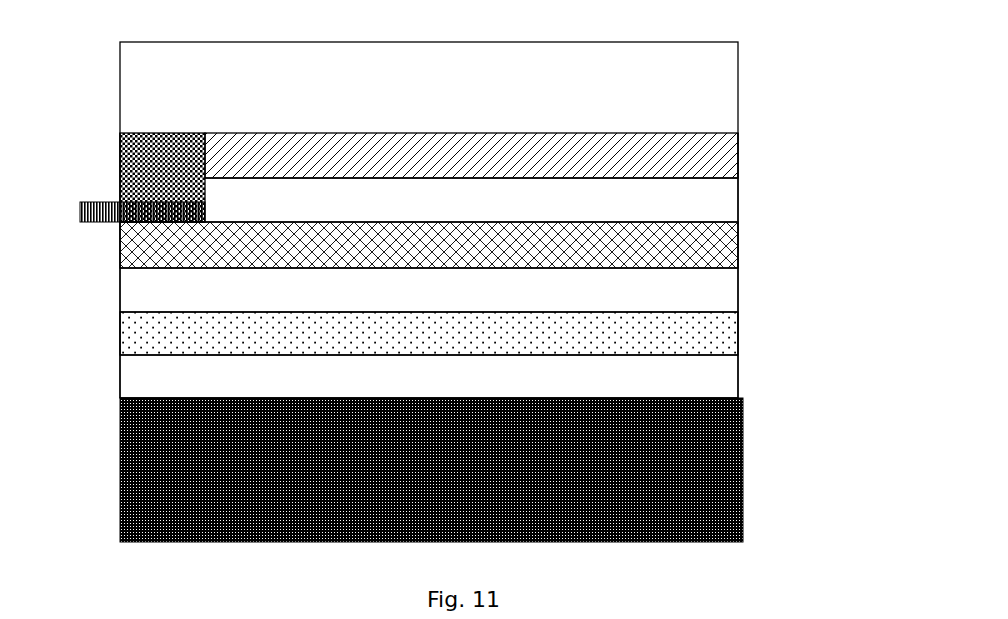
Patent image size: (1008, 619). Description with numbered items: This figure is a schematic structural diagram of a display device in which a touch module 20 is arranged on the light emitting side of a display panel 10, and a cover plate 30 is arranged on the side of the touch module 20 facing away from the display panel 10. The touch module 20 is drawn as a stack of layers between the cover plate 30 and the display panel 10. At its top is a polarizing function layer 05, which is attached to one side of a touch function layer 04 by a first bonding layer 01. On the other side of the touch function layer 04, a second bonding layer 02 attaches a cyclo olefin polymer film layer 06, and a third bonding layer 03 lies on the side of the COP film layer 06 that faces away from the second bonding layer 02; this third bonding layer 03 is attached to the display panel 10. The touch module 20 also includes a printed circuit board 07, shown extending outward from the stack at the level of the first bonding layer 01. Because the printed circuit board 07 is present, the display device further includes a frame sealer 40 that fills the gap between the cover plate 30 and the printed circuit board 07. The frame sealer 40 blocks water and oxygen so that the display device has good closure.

The display panel 10 is at (743, 488).
The touch module 20 is at (843, 152).
The cover plate 30 is at (693, 89).
The frame sealer 40 is at (120, 163).
The first bonding layer 01 is at (710, 212).
The second bonding layer 02 is at (710, 295).
The third bonding layer 03 is at (710, 372).
The touch function layer 04 is at (700, 251).
The polarizing function layer 05 is at (700, 154).
The cyclo olefin polymer (COP) film layer 06 is at (700, 333).
The printed circuit board 07 is at (80, 214).